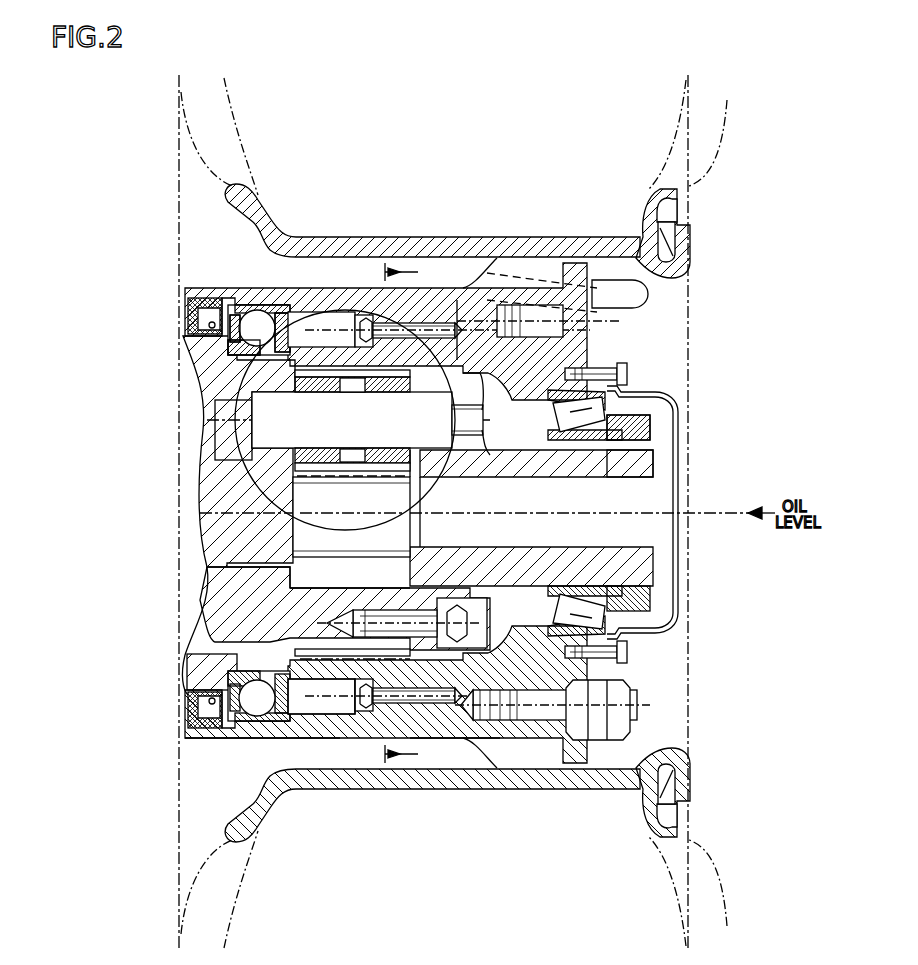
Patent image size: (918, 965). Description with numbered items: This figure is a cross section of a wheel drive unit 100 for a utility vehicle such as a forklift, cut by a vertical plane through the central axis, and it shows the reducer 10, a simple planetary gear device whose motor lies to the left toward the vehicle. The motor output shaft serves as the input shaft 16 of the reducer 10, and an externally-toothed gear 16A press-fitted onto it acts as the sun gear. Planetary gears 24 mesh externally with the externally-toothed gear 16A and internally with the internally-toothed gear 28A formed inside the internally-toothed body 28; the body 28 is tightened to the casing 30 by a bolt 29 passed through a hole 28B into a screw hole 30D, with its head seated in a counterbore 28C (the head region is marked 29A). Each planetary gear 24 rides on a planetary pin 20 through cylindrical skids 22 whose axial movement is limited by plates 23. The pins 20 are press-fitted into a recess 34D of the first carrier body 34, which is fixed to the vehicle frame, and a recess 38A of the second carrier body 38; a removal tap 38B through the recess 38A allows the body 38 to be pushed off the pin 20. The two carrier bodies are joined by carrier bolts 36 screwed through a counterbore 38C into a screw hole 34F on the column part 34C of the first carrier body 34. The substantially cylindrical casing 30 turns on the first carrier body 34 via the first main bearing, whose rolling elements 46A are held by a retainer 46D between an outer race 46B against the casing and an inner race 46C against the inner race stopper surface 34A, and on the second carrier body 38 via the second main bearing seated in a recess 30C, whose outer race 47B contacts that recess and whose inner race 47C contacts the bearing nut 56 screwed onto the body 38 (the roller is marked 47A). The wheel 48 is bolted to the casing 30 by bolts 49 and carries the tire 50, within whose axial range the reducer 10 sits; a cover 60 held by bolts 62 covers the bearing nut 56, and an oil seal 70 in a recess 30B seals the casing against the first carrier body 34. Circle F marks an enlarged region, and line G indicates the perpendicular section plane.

The reducer 10 is at (493, 403).
The input shaft 16 is at (228, 533).
The externally-toothed gear 16A is at (345, 553).
The planetary pin 20 is at (262, 430).
The cylindrical skid 22 is at (300, 386).
The plate 23 is at (497, 310).
The planetary gear 24 is at (300, 466).
The internally-toothed body 28 is at (300, 296).
The internally-toothed gear 28A is at (440, 312).
The hole 28B is at (420, 300).
The counterbore 28C is at (322, 745).
The bolt 29 is at (365, 745).
The bolt head 29A is at (360, 748).
The casing 30 is at (482, 745).
The recess 30B is at (235, 742).
The recess 30C is at (548, 745).
The screw hole 30D is at (430, 745).
The first carrier body 34 is at (255, 600).
The inner race stopper surface 34A is at (232, 685).
The column part 34C is at (300, 580).
The recess 34D is at (235, 448).
The screw hole 34F is at (350, 620).
The carrier bolt 36 is at (445, 748).
The second carrier body 38 is at (650, 562).
The recess 38A is at (470, 460).
The removal tap 38B is at (660, 458).
The counterbore 38C is at (437, 605).
The rolling element 46A is at (257, 318).
The outer race 46B is at (280, 330).
The inner race 46C is at (242, 355).
The retainer 46D is at (222, 368).
The tapered roller 47A is at (608, 410).
The outer race 47B is at (630, 372).
The inner race 47C is at (640, 432).
The wheel 48 is at (690, 253).
The bolt 49 is at (640, 705).
The tire 50 is at (705, 130).
The bearing nut 56 is at (620, 612).
The cover 60 is at (678, 612).
The bolt 62 is at (630, 652).
The oil seal 70 is at (190, 308).
The wheel drive unit 100 is at (815, 187).
The enlarged region F is at (240, 380).
The line G- G is at (401, 513).